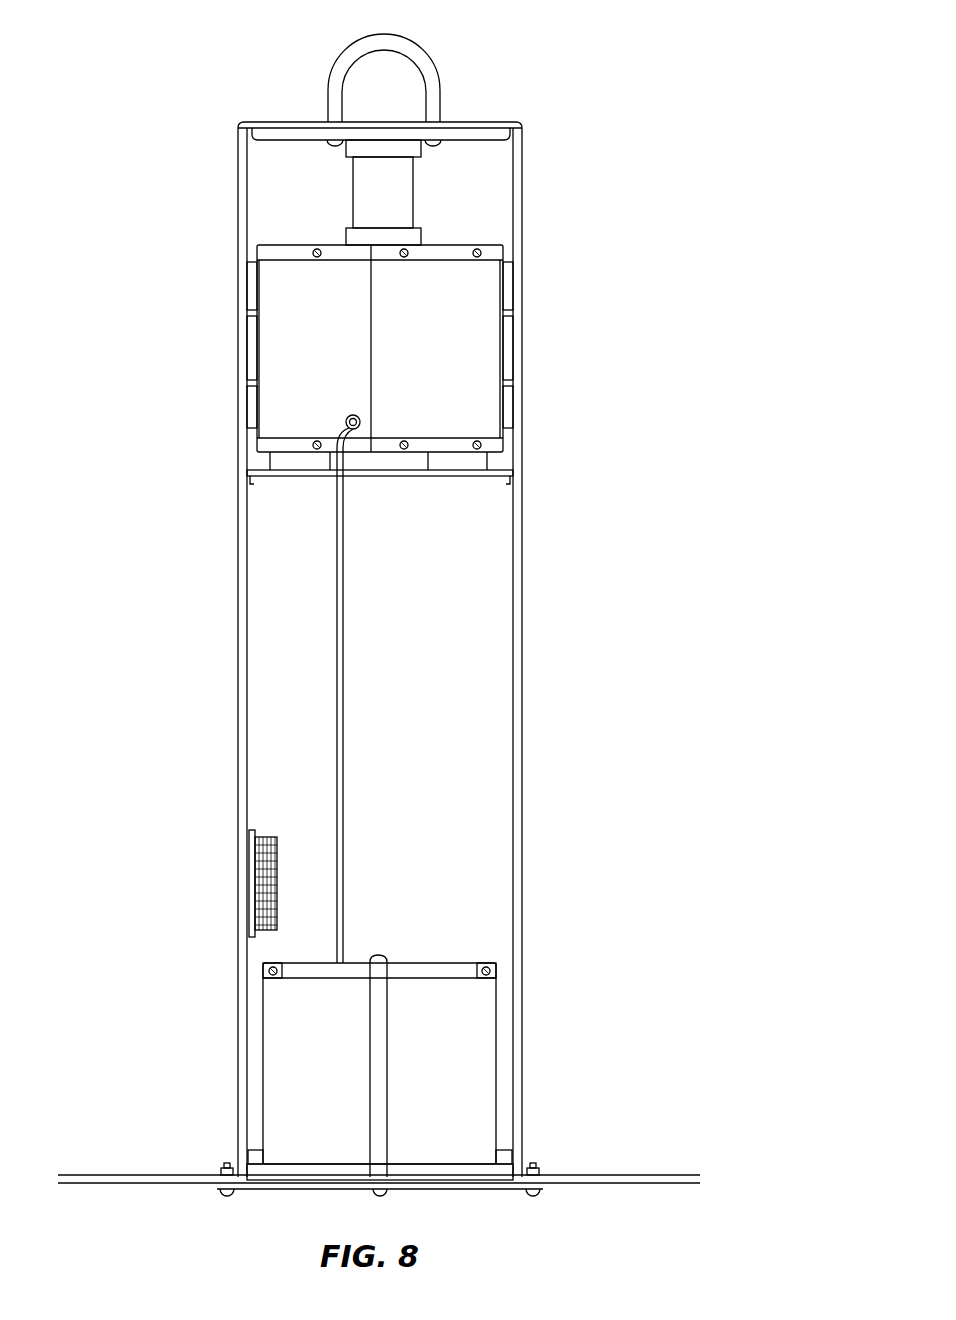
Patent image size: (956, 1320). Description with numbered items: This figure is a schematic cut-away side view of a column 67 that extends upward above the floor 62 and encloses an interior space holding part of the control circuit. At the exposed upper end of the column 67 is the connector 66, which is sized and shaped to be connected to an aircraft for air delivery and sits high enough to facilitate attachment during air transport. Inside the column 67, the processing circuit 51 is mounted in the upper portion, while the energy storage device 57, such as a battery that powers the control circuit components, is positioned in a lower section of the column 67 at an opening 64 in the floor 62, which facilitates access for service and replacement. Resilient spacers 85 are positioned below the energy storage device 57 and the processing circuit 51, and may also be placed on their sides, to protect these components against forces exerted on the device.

The processing circuit 51 is at (285, 365).
The energy storage device 57 is at (462, 1052).
The floor 62 is at (108, 1175).
The opening 64 is at (243, 1175).
The connector 66 is at (422, 60).
The column 67 is at (523, 407).
The resilient spacer 85 is at (397, 178).